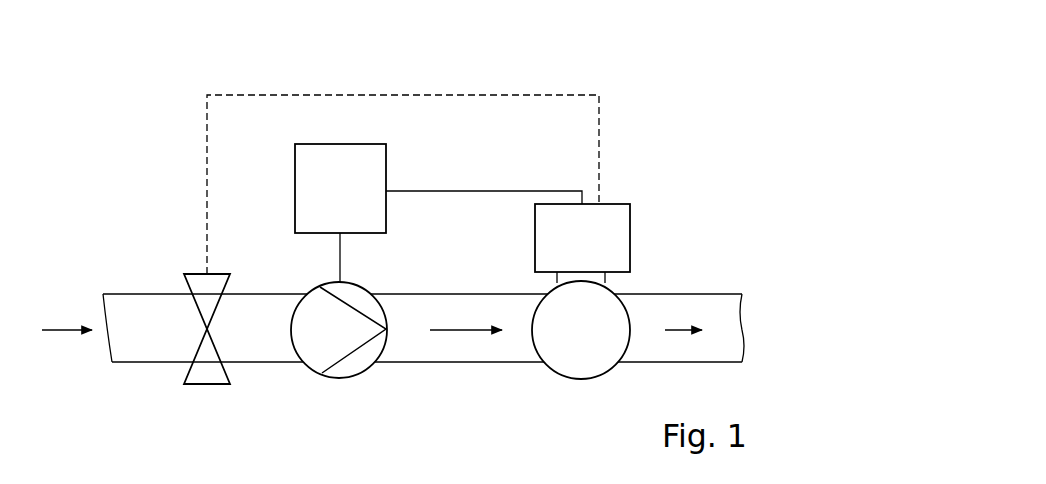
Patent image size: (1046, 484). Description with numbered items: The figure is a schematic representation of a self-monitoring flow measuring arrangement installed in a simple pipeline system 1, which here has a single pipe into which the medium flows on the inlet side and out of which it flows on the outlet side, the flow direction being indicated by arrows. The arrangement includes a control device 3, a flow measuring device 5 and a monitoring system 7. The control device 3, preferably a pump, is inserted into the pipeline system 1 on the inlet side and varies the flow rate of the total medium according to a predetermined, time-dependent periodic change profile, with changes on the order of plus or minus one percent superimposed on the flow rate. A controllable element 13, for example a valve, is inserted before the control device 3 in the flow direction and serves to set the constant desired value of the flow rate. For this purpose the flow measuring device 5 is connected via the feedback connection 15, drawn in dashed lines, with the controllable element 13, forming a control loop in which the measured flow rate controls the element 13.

The pipeline system 1 is at (153, 343).
The control device 3 is at (347, 370).
The flow measuring device 5 is at (715, 160).
The monitoring system 7 is at (253, 53).
The controllable element 13 is at (205, 368).
The feedback connection 15 is at (471, 93).